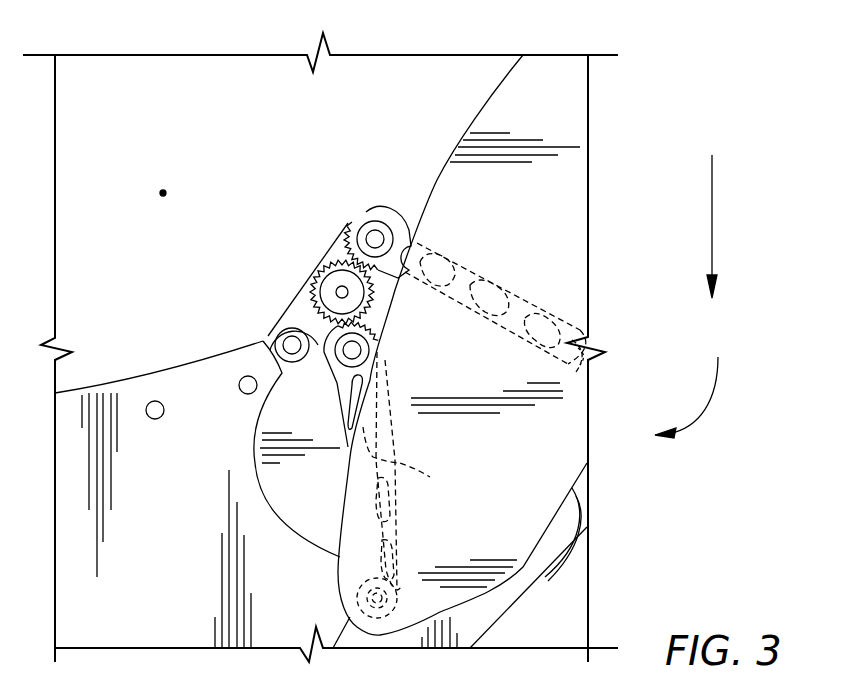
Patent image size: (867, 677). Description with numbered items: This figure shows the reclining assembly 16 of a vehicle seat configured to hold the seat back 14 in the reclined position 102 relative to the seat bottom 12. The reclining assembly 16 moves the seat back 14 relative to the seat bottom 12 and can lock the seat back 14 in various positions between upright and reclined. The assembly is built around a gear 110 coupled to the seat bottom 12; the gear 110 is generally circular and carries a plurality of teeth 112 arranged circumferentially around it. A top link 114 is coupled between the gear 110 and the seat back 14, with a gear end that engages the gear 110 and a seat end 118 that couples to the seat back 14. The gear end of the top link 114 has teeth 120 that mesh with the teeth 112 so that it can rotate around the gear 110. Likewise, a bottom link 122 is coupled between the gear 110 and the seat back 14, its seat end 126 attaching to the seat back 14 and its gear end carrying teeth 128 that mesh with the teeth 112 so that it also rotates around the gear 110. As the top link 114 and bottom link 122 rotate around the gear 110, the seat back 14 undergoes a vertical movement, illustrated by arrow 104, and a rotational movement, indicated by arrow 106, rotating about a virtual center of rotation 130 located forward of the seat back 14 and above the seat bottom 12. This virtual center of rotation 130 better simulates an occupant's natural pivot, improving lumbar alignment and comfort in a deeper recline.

The reclined position 102 is at (628, 58).
The seat bottom 12 is at (127, 390).
The seat back 14 is at (575, 221).
The reclining assembly 16 is at (303, 239).
The gear 110 is at (318, 283).
The teeth 112 is at (345, 258).
The top link 114 is at (480, 270).
The seat end 118 is at (585, 378).
The teeth 120 is at (366, 210).
The bottom link 122 is at (402, 462).
The seat end 126 is at (404, 578).
The teeth 128 is at (385, 328).
The virtual center of rotation 130 is at (163, 190).
The arrow 104 is at (712, 220).
The arrow 106 is at (718, 380).